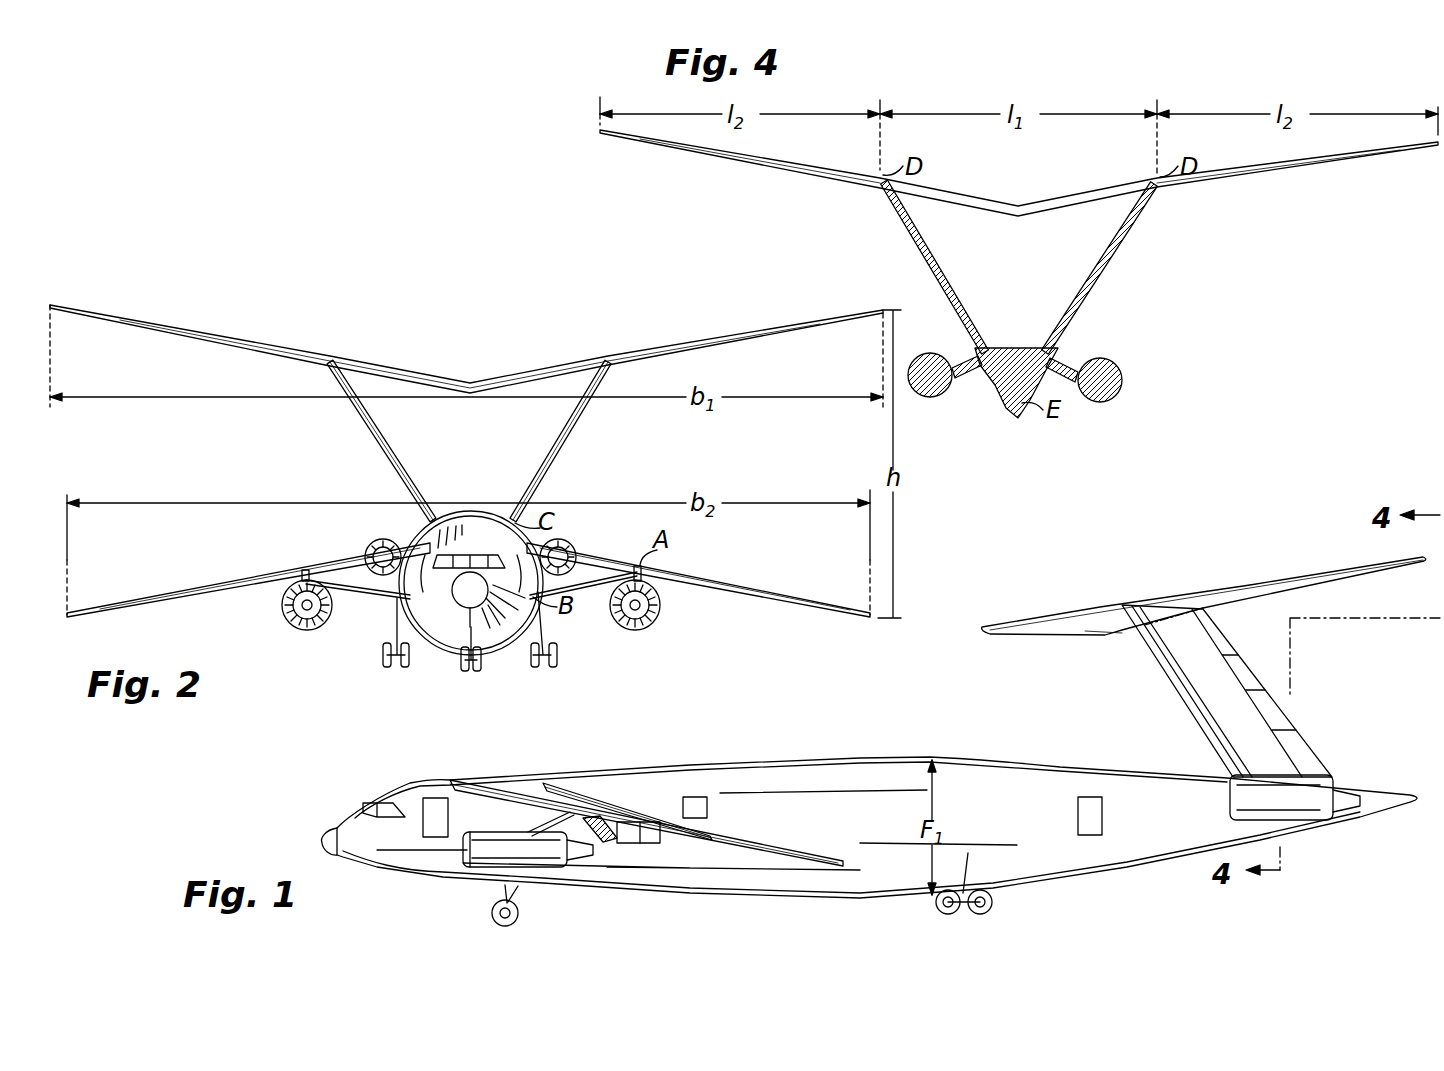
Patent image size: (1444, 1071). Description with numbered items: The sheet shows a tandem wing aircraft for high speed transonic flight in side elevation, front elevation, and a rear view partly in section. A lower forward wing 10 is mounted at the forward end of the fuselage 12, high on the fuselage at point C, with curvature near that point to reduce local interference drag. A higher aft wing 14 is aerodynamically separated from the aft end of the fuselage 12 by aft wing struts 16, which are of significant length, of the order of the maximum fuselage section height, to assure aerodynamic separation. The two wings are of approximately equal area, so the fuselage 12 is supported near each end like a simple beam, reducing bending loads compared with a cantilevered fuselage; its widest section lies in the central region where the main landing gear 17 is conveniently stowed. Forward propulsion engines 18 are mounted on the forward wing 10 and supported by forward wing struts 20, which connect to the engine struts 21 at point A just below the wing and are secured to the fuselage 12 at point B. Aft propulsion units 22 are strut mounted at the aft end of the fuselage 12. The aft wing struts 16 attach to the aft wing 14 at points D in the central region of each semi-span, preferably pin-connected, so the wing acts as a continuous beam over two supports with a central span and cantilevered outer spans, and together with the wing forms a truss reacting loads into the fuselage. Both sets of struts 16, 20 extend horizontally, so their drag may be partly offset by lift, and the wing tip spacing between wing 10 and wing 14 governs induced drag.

In FIG. 2, the lower forward wing 10 is at (779, 595).
In FIG. 1, the lower forward wing 10 is at (744, 838).
In FIG. 2, the fuselage 12 is at (439, 648).
In FIG. 1, the fuselage 12 is at (780, 762).
In FIG. 4, the higher aft wing 14 is at (1053, 199).
In FIG. 2, the higher aft wing 14 is at (207, 333).
In FIG. 1, the higher aft wing 14 is at (1045, 612).
In FIG. 4, the aft wing struts 16 is at (1137, 264).
In FIG. 2, the aft wing struts 16 is at (577, 464).
In FIG. 1, the aft wing struts 16 is at (1180, 700).
In FIG. 1, the main landing gear 17 is at (1000, 906).
In FIG. 2, the forward propulsion engines 18 is at (644, 628).
In FIG. 1, the forward propulsion engines 18 is at (480, 868).
In FIG. 2, the forward wing struts 20 is at (590, 585).
In FIG. 1, the forward wing struts 20 is at (517, 820).
In FIG. 2, the engine struts 21 is at (641, 580).
In FIG. 4, the aft propulsion units 22 is at (1152, 383).
In FIG. 2, the aft propulsion units 22 is at (573, 545).
In FIG. 1, the aft propulsion units 22 is at (1350, 822).